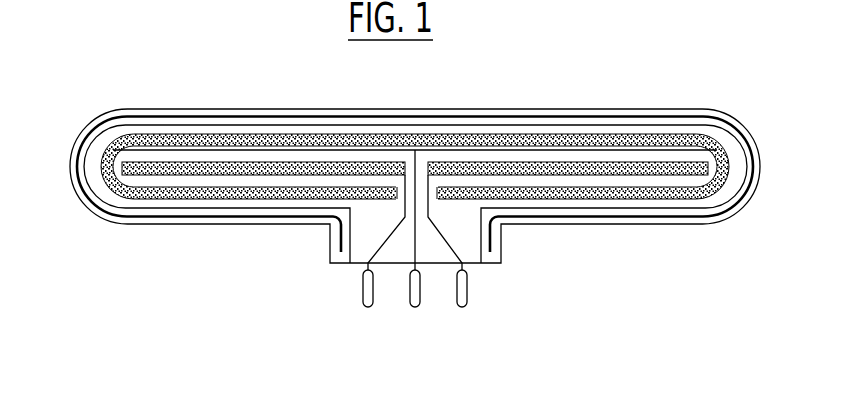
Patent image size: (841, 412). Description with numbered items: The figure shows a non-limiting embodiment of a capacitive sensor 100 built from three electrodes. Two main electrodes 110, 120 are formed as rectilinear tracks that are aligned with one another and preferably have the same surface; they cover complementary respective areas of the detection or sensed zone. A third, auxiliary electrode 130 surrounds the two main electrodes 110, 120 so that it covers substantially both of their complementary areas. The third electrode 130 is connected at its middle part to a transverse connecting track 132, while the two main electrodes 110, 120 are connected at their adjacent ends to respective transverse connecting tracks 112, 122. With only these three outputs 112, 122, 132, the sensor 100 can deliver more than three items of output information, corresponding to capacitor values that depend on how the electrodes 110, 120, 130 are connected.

The capacitive sensor 100 is at (334, 105).
The main electrode 110 is at (214, 174).
The main electrode 120 is at (624, 168).
The third electrode 130 is at (542, 135).
The transverse connecting track 112 is at (364, 281).
The transverse connecting track 122 is at (468, 285).
The transverse connecting track 132 is at (419, 291).